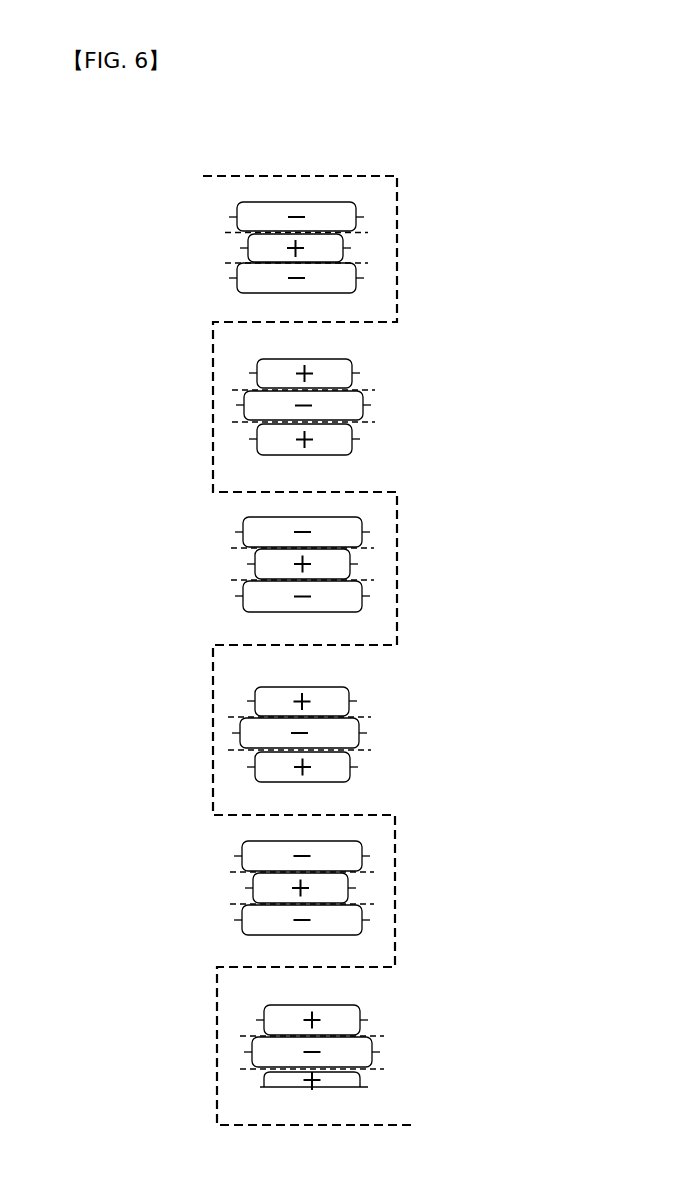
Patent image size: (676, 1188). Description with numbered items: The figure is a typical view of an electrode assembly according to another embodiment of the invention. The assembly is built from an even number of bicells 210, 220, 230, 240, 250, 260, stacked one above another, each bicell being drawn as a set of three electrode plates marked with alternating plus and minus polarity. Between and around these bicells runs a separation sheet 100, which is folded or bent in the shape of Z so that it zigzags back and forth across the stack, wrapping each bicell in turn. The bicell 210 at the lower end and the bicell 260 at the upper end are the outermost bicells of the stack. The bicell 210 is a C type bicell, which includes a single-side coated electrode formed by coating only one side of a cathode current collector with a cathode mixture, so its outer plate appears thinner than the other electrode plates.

The separation sheet 100 is at (400, 550).
The bicell 210 is at (386, 1068).
The bicell 220 is at (216, 910).
The bicell 230 is at (378, 750).
The bicell 240 is at (215, 592).
The bicell 250 is at (382, 416).
The bicell 260 is at (218, 223).